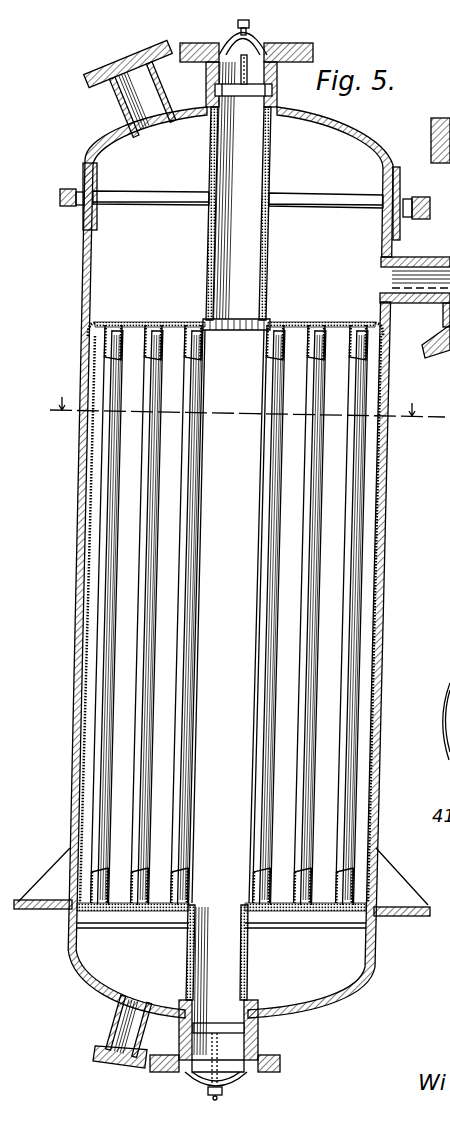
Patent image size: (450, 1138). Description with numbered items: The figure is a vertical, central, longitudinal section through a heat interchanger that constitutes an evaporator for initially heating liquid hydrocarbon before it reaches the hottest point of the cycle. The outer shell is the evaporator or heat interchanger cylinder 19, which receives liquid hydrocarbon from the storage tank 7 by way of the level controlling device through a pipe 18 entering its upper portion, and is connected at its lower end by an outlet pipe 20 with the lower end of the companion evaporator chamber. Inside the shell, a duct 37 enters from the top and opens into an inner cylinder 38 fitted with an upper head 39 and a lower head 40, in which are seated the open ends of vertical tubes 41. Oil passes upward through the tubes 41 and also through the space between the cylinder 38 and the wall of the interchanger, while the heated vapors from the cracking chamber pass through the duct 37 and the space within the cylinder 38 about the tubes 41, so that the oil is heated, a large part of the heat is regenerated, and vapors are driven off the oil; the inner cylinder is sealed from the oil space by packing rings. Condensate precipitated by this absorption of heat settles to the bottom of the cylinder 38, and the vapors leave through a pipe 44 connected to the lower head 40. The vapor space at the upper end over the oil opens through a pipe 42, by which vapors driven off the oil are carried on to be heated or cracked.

The storage tank 7 is at (240, 414).
The pipe 18 is at (432, 251).
The evaporator or heat interchanger cylinder 19 is at (393, 478).
The outlet pipe 20 is at (120, 1054).
The duct 37 is at (270, 275).
The cylinder 38 is at (386, 526).
The head 39 is at (342, 328).
The head 40 is at (158, 908).
The vertical tubes 41 is at (307, 548).
The pipe 42 is at (124, 66).
The pipe 44 is at (250, 960).